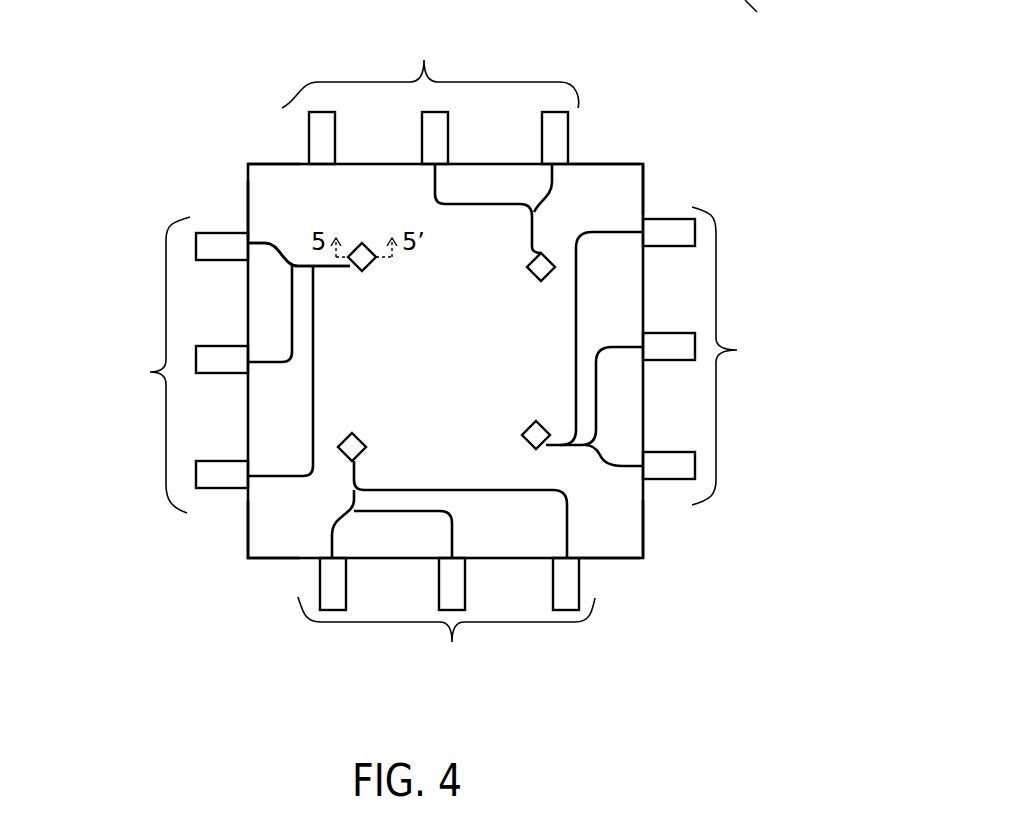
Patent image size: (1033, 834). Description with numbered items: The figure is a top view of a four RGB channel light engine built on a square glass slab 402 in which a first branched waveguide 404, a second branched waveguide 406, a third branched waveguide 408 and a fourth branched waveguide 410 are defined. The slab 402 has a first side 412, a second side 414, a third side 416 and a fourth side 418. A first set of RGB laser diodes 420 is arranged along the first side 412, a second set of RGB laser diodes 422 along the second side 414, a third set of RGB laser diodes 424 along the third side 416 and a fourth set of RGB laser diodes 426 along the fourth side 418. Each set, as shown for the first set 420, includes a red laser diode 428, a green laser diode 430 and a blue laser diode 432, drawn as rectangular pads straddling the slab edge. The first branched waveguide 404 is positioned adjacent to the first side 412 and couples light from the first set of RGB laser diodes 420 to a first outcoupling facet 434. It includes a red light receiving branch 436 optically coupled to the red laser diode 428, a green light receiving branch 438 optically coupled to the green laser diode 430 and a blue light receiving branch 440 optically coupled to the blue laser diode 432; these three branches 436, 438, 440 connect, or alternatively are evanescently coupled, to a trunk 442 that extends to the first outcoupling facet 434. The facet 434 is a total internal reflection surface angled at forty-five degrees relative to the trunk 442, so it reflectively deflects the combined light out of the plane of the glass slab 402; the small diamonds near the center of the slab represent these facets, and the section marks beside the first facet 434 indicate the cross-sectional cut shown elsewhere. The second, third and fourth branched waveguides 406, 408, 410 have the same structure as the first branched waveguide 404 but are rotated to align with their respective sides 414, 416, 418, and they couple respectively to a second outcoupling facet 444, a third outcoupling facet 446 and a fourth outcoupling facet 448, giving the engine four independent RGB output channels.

The glass slab 402 is at (645, 163).
The first branched waveguide 404 is at (248, 205).
The second branched waveguide 406 is at (572, 167).
The third branched waveguide 408 is at (617, 463).
The fourth branched waveguide 410 is at (587, 528).
The first side 412 is at (248, 521).
The second side 414 is at (262, 162).
The third side 416 is at (645, 208).
The fourth side 418 is at (590, 560).
The first set of RGB laser diodes 420 is at (143, 365).
The second set of RGB laser diodes 422 is at (430, 70).
The third set of RGB laser diodes 424 is at (740, 356).
The fourth set of RGB laser diodes 426 is at (446, 637).
The red laser diode 428 is at (553, 117).
The green laser diode 430 is at (448, 118).
The blue laser diode 432 is at (306, 110).
The first outcoupling facet 434 is at (318, 268).
The red light receiving branch 436 is at (262, 240).
The green light receiving branch 438 is at (290, 327).
The blue light receiving branch 440 is at (313, 412).
The trunk 442 is at (317, 267).
The second outcoupling facet 444 is at (543, 251).
The third outcoupling facet 446 is at (545, 443).
The fourth outcoupling facet 448 is at (342, 456).